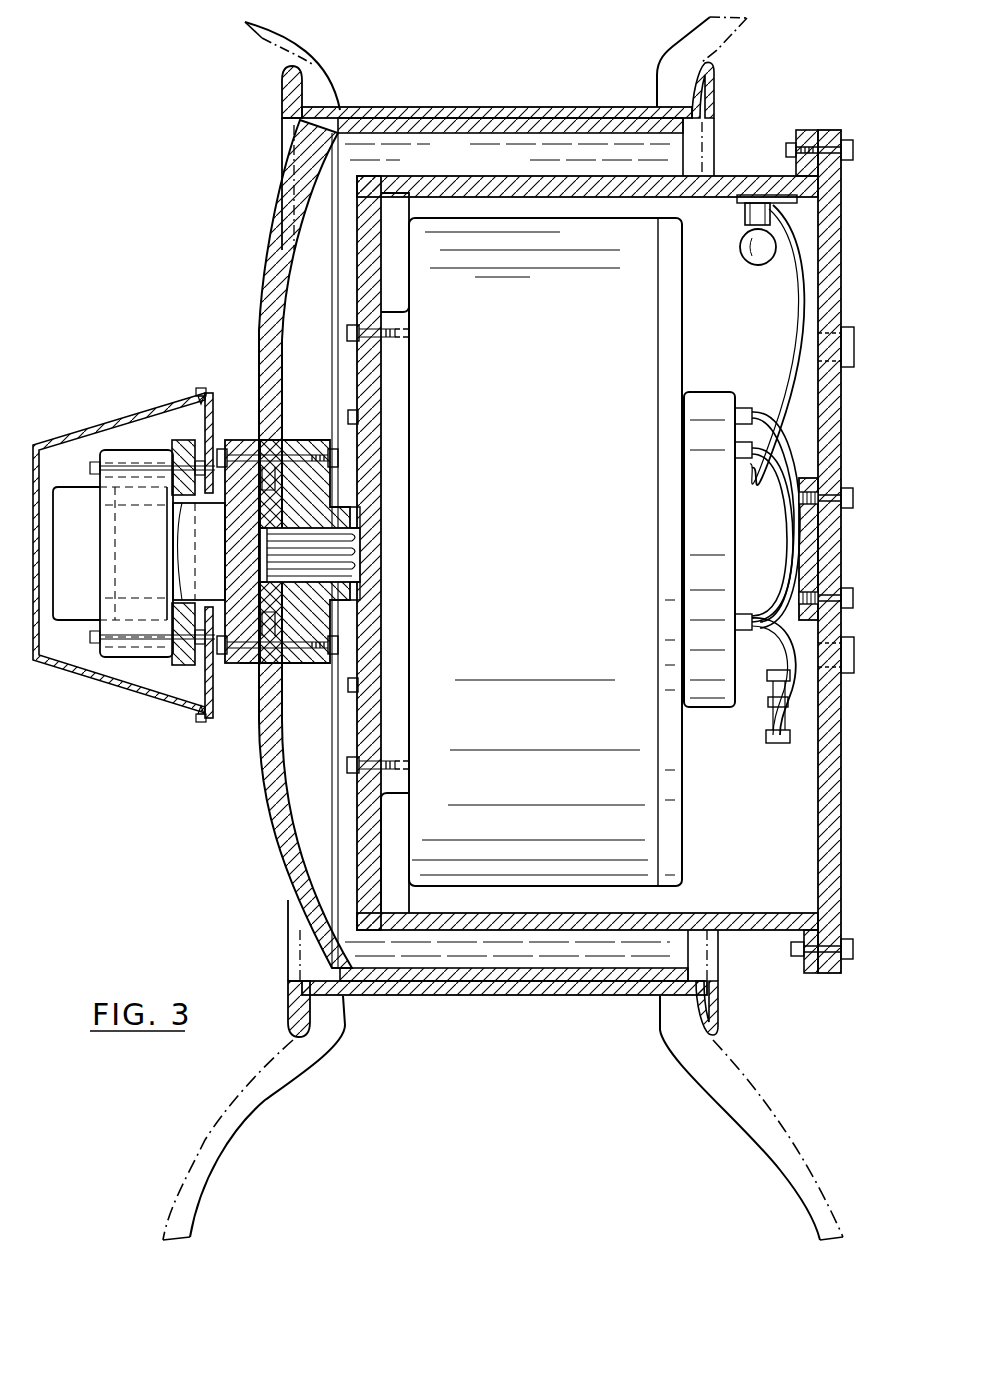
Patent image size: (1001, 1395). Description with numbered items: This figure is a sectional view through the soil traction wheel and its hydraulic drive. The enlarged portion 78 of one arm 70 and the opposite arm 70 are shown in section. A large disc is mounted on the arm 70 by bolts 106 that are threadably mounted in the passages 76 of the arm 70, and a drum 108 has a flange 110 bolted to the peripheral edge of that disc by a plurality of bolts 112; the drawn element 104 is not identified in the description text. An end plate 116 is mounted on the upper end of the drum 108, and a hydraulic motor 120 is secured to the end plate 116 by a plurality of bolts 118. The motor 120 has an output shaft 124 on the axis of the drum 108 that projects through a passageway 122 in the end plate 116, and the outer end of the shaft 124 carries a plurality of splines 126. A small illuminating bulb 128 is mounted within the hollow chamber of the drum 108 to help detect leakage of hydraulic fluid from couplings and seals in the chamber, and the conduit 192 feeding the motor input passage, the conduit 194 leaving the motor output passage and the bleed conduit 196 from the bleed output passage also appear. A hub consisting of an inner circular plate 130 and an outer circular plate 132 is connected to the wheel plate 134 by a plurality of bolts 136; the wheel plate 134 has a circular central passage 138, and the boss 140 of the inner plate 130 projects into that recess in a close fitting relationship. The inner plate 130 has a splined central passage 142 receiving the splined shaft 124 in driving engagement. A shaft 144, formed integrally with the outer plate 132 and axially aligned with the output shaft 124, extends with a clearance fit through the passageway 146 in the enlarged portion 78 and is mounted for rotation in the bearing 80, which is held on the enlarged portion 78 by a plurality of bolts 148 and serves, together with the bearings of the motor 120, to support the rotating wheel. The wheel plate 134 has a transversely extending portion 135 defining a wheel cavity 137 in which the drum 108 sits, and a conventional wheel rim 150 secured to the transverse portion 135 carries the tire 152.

The arm 70 is at (810, 472).
The passages 76 is at (815, 590).
The enlarged portion 78 is at (179, 438).
The bearing assembly 80 is at (137, 616).
The housing side wall 104 is at (829, 798).
The bolts 106 is at (840, 492).
The drum 108 is at (549, 176).
The flange 110 is at (798, 137).
The bolts 112 is at (823, 130).
The end plate 116 is at (370, 252).
The bolts 118 is at (350, 414).
The hydraulic motor 120 is at (510, 368).
The passageway 122 is at (362, 523).
The output shaft 124 is at (343, 553).
The splines 126 is at (362, 588).
The illuminating bulb 128 is at (742, 245).
The inner circular plate 130 is at (315, 490).
The outer circular plate 132 is at (240, 440).
The wheel plate 134 is at (270, 310).
The transversely extending portion 135 is at (437, 134).
The bolts 136 is at (250, 660).
The wheel cavity 137 is at (466, 160).
The circular central passage 138 is at (270, 628).
The boss 140 is at (274, 486).
The central passage 142 is at (328, 586).
The shaft 144 is at (185, 545).
The passageway 146 is at (177, 592).
The bolts 148 is at (177, 468).
The wheel rim 150 is at (415, 118).
The tire 152 is at (318, 52).
The conduit 192 is at (783, 545).
The conduit 194 is at (765, 640).
The bleed conduit 196 is at (773, 497).